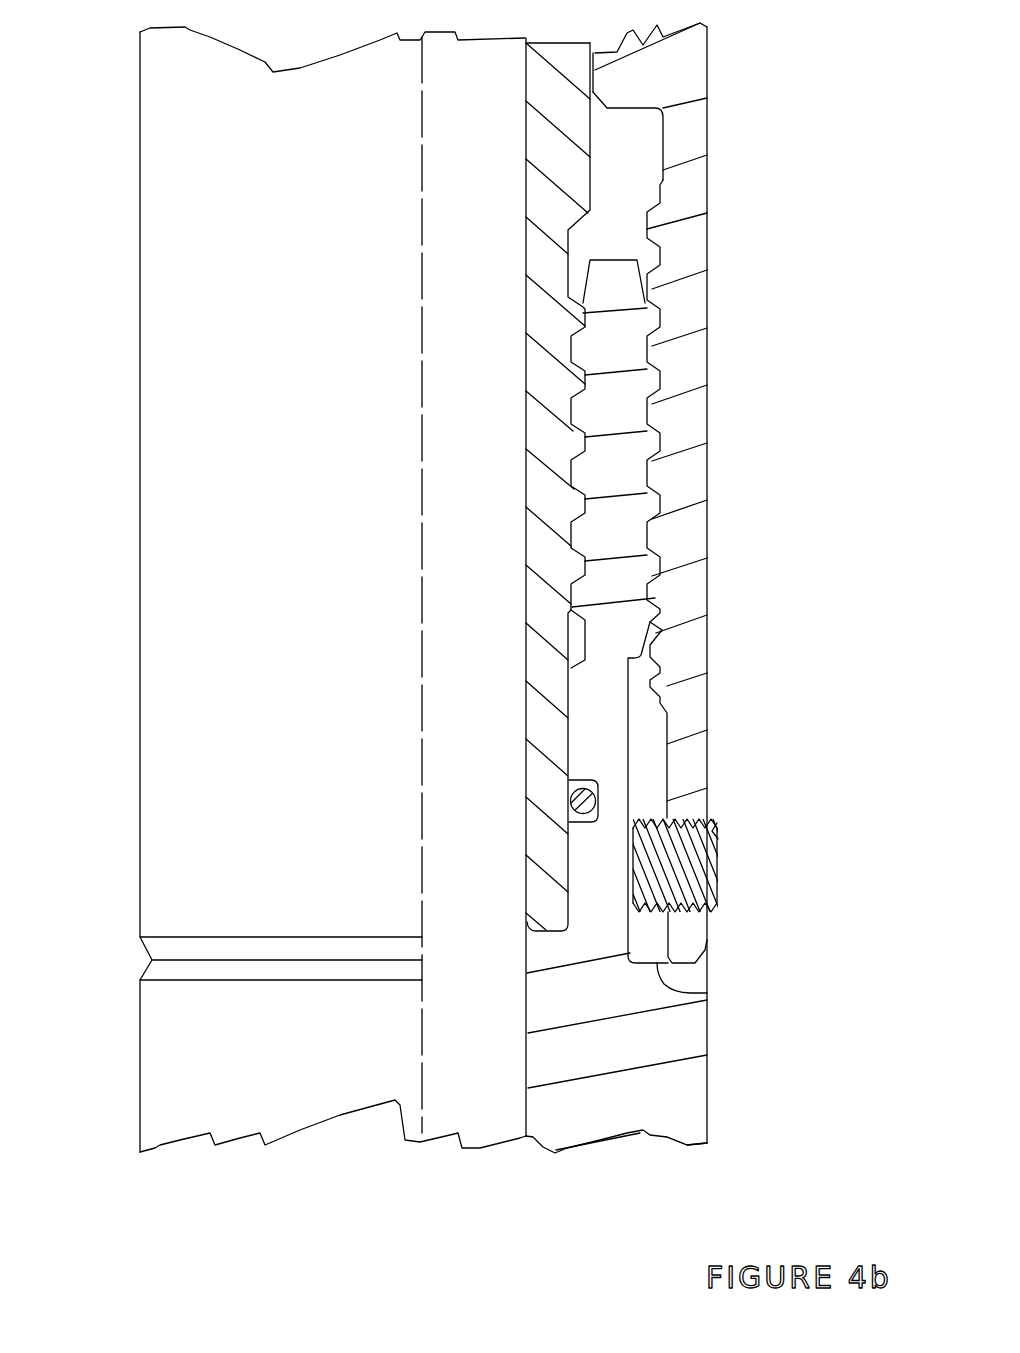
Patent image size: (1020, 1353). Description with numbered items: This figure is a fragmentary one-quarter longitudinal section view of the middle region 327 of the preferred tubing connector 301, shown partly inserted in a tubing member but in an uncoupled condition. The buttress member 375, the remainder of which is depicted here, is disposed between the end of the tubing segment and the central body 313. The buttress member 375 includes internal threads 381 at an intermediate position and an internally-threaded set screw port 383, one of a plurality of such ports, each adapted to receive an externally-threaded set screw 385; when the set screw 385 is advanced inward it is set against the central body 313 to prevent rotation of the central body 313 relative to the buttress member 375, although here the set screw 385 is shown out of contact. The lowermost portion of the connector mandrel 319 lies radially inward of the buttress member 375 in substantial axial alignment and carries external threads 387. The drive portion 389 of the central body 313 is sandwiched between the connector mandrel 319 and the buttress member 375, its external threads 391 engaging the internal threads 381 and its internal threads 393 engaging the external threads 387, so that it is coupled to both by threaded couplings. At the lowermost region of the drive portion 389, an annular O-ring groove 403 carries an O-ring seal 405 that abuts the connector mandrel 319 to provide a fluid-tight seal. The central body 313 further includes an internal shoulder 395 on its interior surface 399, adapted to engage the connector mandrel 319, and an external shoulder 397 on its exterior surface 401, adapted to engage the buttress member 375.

The tubing connector 301 is at (757, 222).
The central body 313 is at (668, 1028).
The connector mandrel 319 is at (567, 152).
The middle region 327 is at (126, 677).
The buttress member 375 is at (688, 62).
The internal threads 381 is at (645, 392).
The internally-threaded set screw port 383 is at (802, 842).
The set screw 385 is at (700, 873).
The external threads 387 is at (655, 440).
The drive portion 389 is at (612, 530).
The external threads 391 is at (620, 598).
The internal threads 393 is at (564, 347).
The internal shoulder 395 is at (560, 948).
The external shoulder 397 is at (673, 990).
The interior surface 399 is at (520, 1075).
The exterior surface 401 is at (700, 1140).
The annular O-ring groove 403 is at (590, 772).
The O-ring seal 405 is at (600, 807).